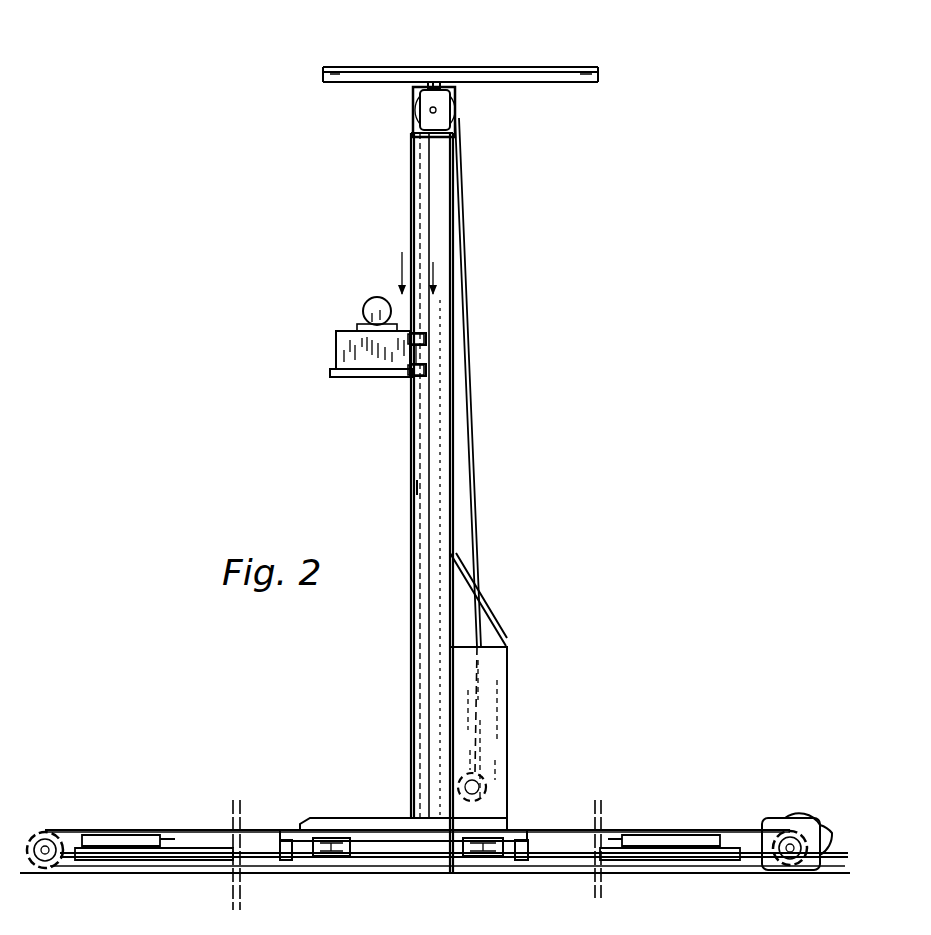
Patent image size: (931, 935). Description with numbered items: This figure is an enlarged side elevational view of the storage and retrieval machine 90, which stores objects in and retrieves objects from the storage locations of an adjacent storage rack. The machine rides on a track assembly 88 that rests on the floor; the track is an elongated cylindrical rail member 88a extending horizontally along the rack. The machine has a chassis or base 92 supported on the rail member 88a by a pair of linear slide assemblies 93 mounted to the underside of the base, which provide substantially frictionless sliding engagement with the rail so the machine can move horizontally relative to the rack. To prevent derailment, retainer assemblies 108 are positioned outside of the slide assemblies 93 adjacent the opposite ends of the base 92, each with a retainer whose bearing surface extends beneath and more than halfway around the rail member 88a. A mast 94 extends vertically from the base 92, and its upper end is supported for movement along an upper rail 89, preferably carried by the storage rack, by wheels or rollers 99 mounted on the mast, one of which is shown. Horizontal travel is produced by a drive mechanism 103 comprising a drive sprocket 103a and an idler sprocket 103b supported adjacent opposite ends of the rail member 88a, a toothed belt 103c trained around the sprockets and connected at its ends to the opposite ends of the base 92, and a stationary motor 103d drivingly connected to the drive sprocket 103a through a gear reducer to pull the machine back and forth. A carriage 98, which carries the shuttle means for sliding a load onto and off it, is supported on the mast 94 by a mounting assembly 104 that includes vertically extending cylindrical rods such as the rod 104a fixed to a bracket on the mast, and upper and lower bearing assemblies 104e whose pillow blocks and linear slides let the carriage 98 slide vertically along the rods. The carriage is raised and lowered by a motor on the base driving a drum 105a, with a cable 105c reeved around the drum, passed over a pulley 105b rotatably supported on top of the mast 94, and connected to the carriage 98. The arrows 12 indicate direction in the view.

The direction arrows 12 is at (431, 263).
The track assembly 88 is at (176, 878).
The rail member 88a is at (220, 831).
The upper rail 89 is at (353, 82).
The storage and retrieval machine 90 is at (596, 190).
The base 92 is at (362, 818).
The linear slide assemblies 93 is at (320, 860).
The mast 94 is at (437, 448).
The carriage 98 is at (352, 381).
The wheels or rollers 99 is at (440, 70).
The drive mechanism 103 is at (788, 796).
The drive sprocket 103a is at (797, 873).
The idler sprocket 103b is at (52, 832).
The toothed belt 103c is at (612, 830).
The stationary motor 103d is at (810, 824).
The mounting assembly 104 is at (442, 326).
The cylindrical rod 104a is at (420, 487).
The bearing assemblies 104e is at (414, 370).
The drum 105a is at (484, 780).
The pulley 105b is at (458, 114).
The cable 105c is at (474, 500).
The stops 108 is at (289, 861).